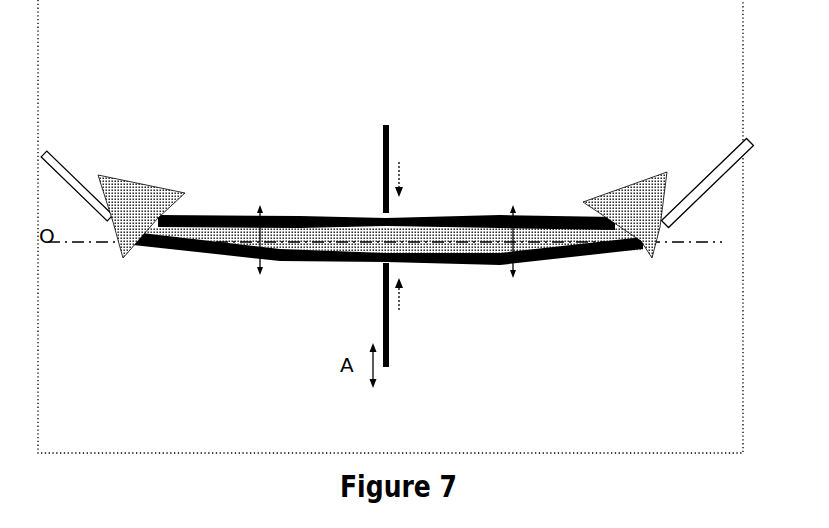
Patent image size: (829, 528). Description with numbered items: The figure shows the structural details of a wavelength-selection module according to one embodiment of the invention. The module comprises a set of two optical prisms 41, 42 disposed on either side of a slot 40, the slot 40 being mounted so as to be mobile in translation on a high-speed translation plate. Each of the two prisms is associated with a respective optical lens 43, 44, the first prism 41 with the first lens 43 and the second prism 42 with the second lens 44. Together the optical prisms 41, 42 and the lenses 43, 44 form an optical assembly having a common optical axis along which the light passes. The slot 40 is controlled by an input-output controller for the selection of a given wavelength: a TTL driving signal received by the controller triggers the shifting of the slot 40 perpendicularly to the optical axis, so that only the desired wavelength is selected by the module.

The slot 40 is at (365, 194).
The optical prism 41 is at (138, 178).
The optical prism 42 is at (623, 188).
The optical lens 43 is at (260, 203).
The optical lens 44 is at (510, 206).